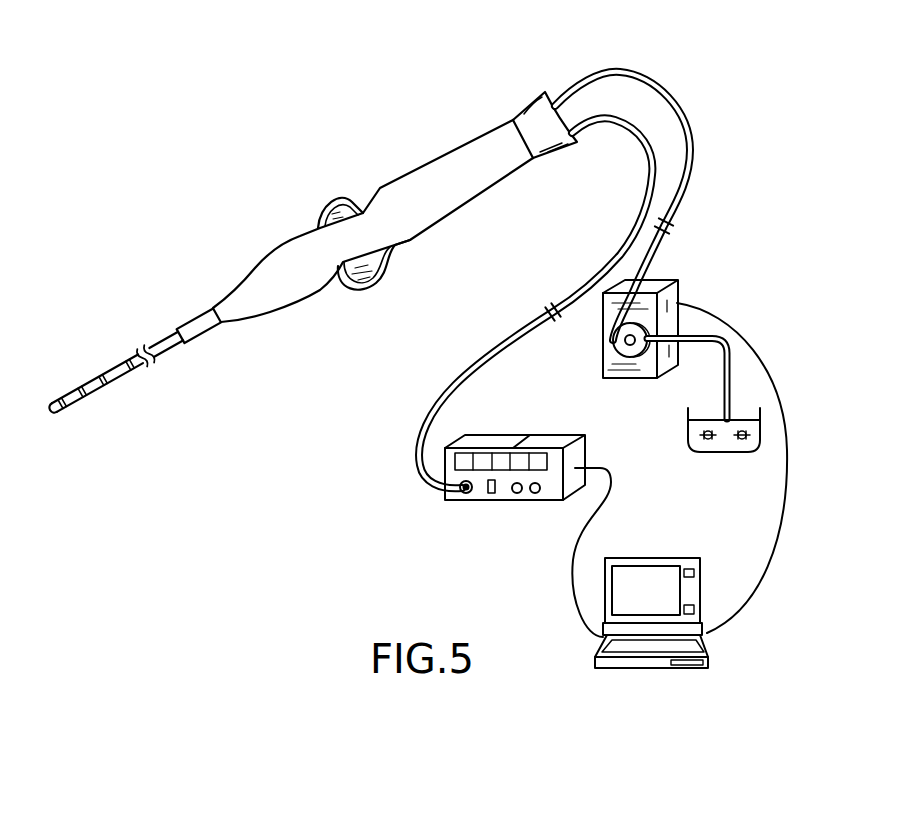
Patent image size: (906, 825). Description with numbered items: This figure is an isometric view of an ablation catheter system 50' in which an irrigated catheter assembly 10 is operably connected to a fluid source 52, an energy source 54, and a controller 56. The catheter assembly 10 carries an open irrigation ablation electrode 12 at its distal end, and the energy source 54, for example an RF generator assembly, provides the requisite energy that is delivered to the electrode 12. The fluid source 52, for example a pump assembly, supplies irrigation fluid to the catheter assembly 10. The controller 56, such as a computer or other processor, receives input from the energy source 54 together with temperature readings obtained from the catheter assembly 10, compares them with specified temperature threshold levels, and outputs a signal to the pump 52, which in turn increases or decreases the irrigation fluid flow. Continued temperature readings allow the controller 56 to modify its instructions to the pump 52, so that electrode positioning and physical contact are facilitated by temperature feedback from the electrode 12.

The catheter assembly system 50' is at (416, 398).
The catheter assembly 10 is at (244, 245).
The electrode 12 is at (53, 392).
The fluid source 52 is at (689, 262).
The energy source 54 is at (544, 415).
The controller 56 is at (668, 696).